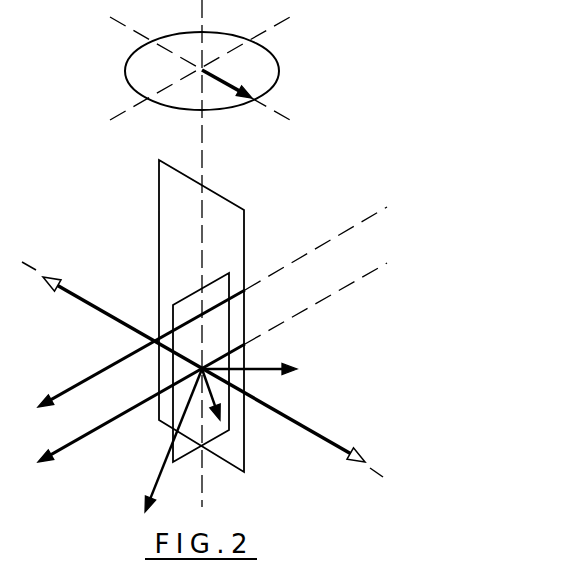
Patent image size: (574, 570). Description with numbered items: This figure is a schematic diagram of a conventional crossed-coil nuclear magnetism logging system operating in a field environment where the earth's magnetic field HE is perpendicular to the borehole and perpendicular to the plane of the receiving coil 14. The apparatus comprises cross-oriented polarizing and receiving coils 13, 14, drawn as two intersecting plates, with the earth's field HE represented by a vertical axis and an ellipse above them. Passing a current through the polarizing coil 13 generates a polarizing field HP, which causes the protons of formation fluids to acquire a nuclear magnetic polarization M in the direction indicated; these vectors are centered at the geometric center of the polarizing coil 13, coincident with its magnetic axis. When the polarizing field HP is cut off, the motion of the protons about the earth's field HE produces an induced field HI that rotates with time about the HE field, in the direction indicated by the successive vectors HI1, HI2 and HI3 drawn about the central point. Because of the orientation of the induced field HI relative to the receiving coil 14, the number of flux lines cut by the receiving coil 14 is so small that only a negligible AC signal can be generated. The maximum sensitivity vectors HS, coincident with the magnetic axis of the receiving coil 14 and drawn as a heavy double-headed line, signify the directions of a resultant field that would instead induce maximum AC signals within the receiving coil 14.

The polarizing coil 13 is at (159, 237).
The receiving coil 14 is at (230, 323).
The earth's magnetic field HE is at (222, 74).
The maximum sensitivity vector of the receiving coil HS is at (202, 369).
The polarizing field HP is at (212, 307).
The nuclear magnetic polarization M is at (77, 400).
The induced magnetic field HI is at (212, 362).
The induced field vector at first rotational position HI1 is at (163, 440).
The induced field vector at second rotational position HI2 is at (262, 368).
The induced field vector at third rotational position HI3 is at (212, 395).